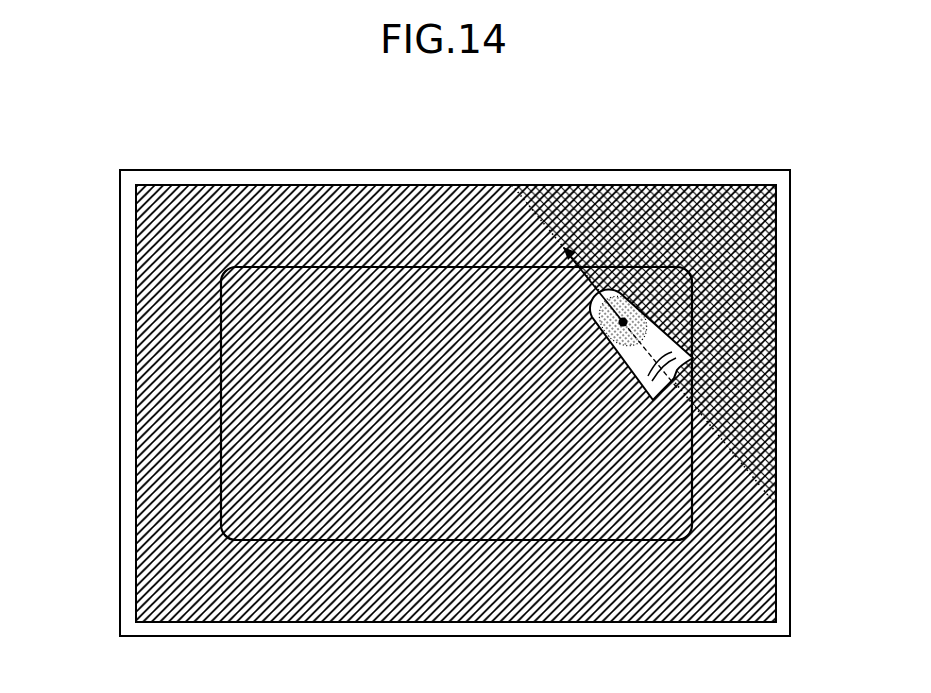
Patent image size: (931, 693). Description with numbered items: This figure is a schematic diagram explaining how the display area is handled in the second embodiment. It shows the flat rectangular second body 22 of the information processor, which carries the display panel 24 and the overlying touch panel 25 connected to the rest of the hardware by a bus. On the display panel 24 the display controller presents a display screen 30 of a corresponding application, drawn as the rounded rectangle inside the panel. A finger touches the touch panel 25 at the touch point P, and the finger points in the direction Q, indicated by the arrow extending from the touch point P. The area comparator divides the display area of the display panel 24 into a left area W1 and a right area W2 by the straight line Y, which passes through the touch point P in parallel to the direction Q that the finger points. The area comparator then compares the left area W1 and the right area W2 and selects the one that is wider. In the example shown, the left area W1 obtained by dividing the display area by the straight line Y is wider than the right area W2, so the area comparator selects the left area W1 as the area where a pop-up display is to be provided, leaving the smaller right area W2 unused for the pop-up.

The second body 22 is at (790, 178).
The display panel 24 is at (361, 200).
The touch panel 25 is at (452, 200).
The display screen 30 is at (678, 505).
The left area W1 is at (252, 427).
The right area W2 is at (730, 223).
The straight line Y is at (558, 215).
The direction that a finger points Q is at (590, 270).
The touch point P is at (623, 317).